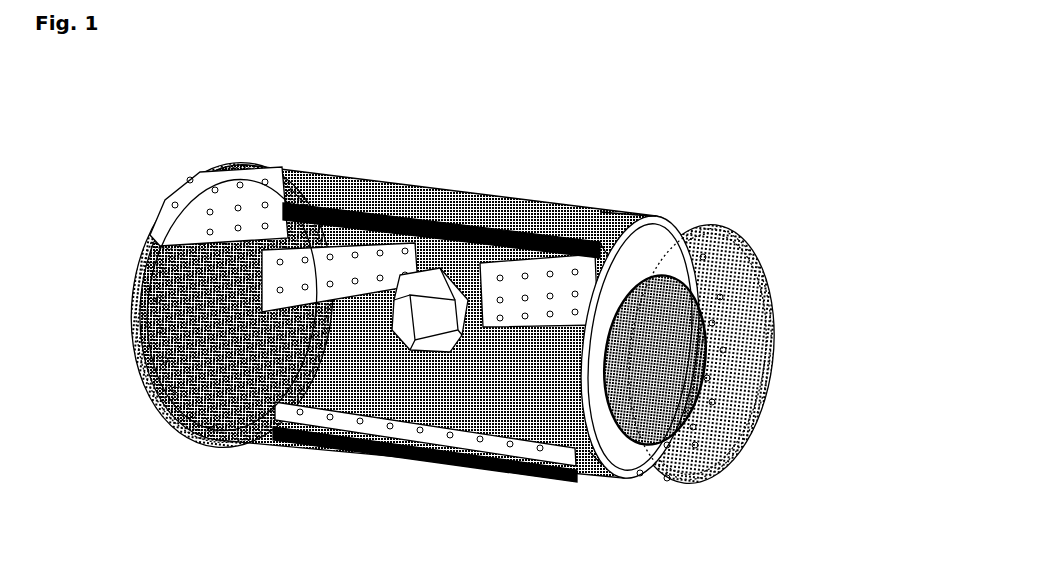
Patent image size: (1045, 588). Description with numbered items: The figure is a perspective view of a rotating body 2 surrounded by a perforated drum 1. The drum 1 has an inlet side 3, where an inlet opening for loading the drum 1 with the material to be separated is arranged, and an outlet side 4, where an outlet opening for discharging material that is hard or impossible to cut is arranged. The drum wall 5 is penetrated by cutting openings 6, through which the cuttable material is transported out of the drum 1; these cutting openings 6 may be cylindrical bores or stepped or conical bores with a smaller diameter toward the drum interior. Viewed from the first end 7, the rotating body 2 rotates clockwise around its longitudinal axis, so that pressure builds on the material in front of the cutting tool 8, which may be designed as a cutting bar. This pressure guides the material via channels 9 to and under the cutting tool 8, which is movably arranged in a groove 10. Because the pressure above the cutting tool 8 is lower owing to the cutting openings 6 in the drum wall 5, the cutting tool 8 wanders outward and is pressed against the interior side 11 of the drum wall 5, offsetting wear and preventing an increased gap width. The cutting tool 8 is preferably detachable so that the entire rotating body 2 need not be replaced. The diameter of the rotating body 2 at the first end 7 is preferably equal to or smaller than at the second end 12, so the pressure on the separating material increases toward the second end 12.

The drum 1 is at (232, 180).
The rotating body 2 is at (655, 262).
The inlet side 3 is at (158, 218).
The outlet side 4 is at (771, 337).
The drum wall 5 is at (717, 228).
The cutting openings 6 is at (207, 290).
The first end 7 is at (153, 275).
The cutting tool 8 is at (463, 243).
The channels 9 is at (447, 312).
The groove 10 is at (608, 272).
The interior side 11 is at (750, 381).
The second end 12 is at (642, 368).